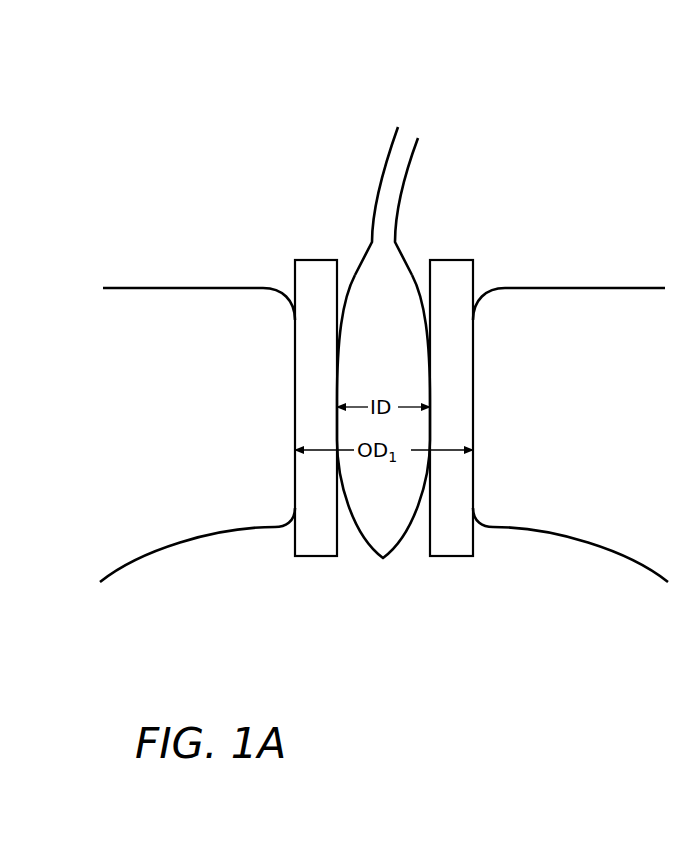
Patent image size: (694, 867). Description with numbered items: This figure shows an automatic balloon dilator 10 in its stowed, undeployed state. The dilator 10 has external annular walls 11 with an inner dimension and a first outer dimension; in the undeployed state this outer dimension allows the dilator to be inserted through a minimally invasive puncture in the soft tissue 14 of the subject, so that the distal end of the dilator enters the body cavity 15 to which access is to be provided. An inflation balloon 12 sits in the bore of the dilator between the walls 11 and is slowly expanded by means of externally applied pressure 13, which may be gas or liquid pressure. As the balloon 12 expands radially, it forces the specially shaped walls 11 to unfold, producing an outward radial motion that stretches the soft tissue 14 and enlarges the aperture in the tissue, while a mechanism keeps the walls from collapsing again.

The dilator 10 is at (608, 153).
The external annular walls 11 is at (313, 557).
The inflation balloon 12 is at (383, 558).
The externally applied pressure 13 is at (410, 125).
The soft tissue 14 is at (213, 437).
The body cavity 15 is at (363, 674).